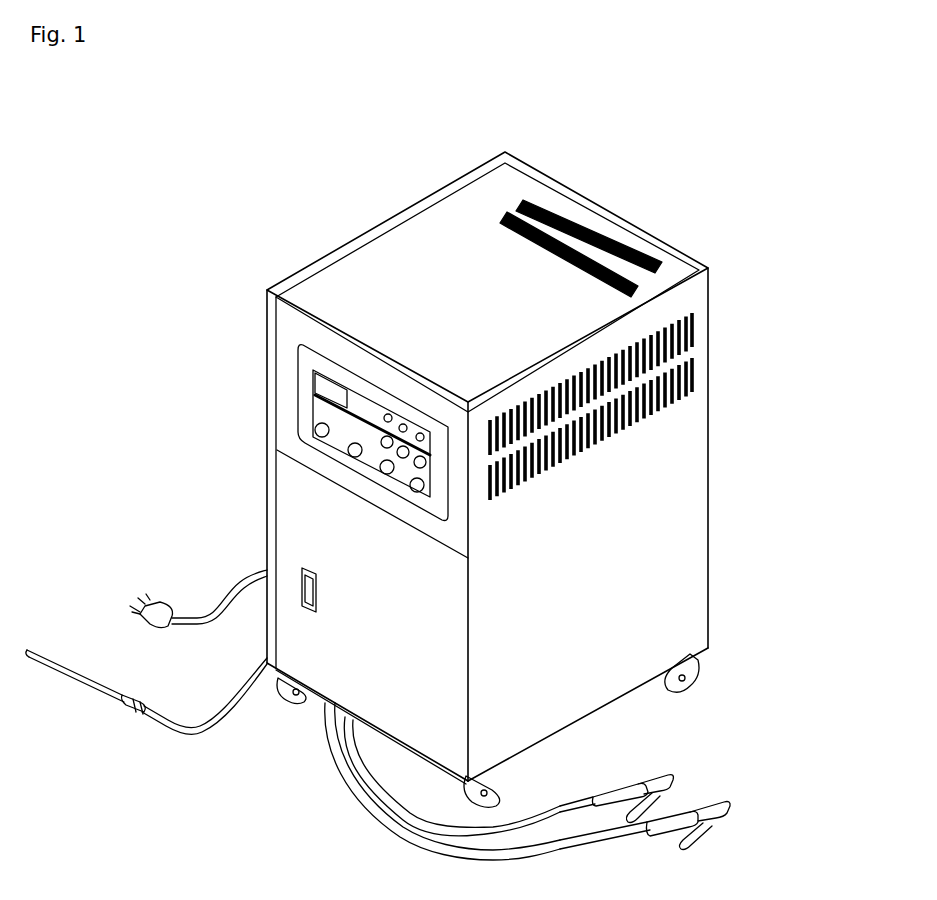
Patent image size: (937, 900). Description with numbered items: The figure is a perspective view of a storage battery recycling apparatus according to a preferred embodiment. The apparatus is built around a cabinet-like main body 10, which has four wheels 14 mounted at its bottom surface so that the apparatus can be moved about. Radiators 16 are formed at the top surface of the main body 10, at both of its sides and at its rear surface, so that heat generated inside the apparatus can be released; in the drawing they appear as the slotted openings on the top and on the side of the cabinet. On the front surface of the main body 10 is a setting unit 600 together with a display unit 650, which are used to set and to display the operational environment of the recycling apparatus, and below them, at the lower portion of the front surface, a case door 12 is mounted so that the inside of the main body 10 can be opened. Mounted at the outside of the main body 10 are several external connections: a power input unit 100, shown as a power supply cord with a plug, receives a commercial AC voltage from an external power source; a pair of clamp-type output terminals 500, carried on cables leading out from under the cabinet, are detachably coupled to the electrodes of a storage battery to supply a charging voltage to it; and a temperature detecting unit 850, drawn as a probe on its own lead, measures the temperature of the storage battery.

The main body 10 is at (702, 437).
The case door 12 is at (302, 590).
The wheels 14 is at (290, 707).
The radiators 16 is at (688, 310).
The power input unit 100 is at (132, 620).
The clamp-type output terminals 500 is at (720, 800).
The setting unit 600 is at (317, 418).
The display unit 650 is at (317, 380).
The temperature detecting unit 850 is at (100, 688).